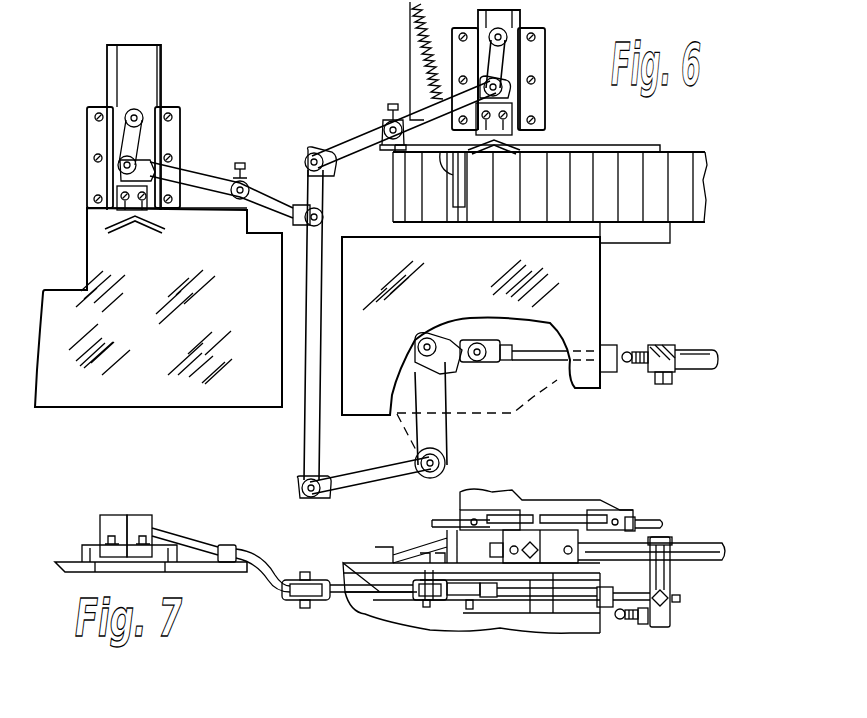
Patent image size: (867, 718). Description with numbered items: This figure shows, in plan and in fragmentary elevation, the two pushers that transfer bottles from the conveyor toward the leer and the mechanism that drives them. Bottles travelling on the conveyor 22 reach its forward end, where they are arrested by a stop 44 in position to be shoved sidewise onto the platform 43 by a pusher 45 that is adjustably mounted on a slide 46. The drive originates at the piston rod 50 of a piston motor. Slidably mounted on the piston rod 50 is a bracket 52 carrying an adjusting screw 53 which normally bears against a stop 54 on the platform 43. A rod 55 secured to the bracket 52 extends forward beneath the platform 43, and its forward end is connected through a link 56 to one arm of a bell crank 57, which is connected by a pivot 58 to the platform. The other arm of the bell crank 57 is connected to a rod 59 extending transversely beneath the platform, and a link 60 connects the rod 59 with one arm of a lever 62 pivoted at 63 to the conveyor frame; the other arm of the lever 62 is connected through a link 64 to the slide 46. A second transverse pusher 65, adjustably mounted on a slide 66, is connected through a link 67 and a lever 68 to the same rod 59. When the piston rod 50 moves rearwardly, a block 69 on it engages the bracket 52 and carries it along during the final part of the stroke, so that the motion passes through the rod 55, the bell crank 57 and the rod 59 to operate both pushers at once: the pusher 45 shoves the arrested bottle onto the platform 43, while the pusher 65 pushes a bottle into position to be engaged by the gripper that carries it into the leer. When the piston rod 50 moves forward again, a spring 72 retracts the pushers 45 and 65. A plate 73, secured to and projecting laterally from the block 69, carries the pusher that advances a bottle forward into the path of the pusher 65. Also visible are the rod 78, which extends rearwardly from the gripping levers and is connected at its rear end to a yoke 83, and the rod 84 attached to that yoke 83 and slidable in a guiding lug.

In FIG. 6, the conveyor 22 is at (682, 162).
In FIG. 6, the platform 43 is at (162, 405).
In FIG. 6, the stop 44 is at (433, 156).
In FIG. 6, the pusher 45 is at (522, 143).
In FIG. 6, the slide 46 is at (513, 18).
In FIG. 7, the piston rod 50 is at (697, 560).
In FIG. 6, the bracket 52 is at (663, 345).
In FIG. 7, the bracket 52 is at (650, 620).
In FIG. 7, the adjusting screw 53 is at (618, 620).
In FIG. 6, the stop 54 is at (610, 374).
In FIG. 7, the stop 54 is at (603, 623).
In FIG. 6, the rod 55 is at (556, 385).
In FIG. 7, the rod 55 is at (528, 596).
In FIG. 6, the link 56 is at (460, 348).
In FIG. 7, the link 56 is at (453, 600).
In FIG. 6, the bell crank 57 is at (452, 440).
In FIG. 7, the bell crank 57 is at (390, 607).
In FIG. 6, the pivot 58 is at (440, 468).
In FIG. 6, the rod 59 is at (305, 444).
In FIG. 6, the link 60 is at (306, 186).
In FIG. 6, the lever 62 is at (363, 138).
In FIG. 6, the pivot 63 is at (387, 126).
In FIG. 6, the link 64 is at (498, 58).
In FIG. 6, the second transverse pusher 65 is at (147, 232).
In FIG. 7, the second transverse pusher 65 is at (147, 522).
In FIG. 6, the slide 66 is at (148, 98).
In FIG. 6, the link 67 is at (122, 139).
In FIG. 6, the lever 68 is at (200, 181).
In FIG. 7, the lever 68 is at (195, 543).
In FIG. 7, the block 69 is at (550, 557).
In FIG. 6, the spring 72 is at (427, 43).
In FIG. 7, the plate 73 is at (548, 520).
In FIG. 7, the rod 78 is at (447, 520).
In FIG. 7, the yoke 83 is at (547, 500).
In FIG. 7, the rod 84 is at (655, 517).